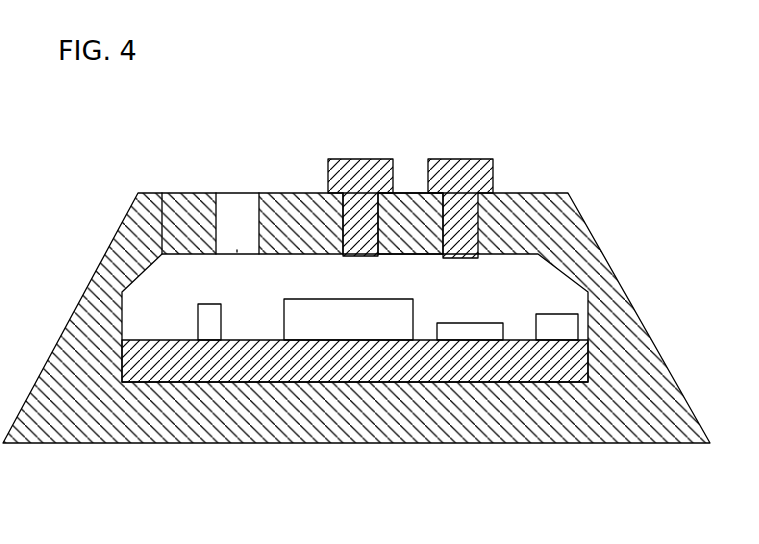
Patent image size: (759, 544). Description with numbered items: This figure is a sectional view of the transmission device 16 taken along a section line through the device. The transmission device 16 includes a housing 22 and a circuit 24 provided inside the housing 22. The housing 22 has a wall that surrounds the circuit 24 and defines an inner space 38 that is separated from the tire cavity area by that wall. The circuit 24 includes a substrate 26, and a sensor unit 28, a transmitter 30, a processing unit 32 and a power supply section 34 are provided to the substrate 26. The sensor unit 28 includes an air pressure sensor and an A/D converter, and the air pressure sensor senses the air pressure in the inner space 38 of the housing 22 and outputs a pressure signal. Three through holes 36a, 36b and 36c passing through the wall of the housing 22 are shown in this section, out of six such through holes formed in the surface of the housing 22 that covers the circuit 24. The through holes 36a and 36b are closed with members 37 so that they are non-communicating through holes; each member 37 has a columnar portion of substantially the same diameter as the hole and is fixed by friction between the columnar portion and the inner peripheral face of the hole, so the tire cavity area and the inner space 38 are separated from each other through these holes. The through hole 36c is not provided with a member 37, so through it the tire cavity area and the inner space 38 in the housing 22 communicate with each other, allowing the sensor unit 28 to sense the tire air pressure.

The transmission device 16 is at (580, 97).
The housing 22 is at (602, 263).
The circuit 24 is at (147, 312).
The substrate 26 is at (367, 362).
The sensor unit 28 is at (277, 217).
The transmitter 30 is at (557, 322).
The processing unit 32 is at (469, 325).
The power supply section 34 is at (210, 319).
The through hole 36a is at (380, 257).
The through hole 36b is at (487, 260).
The through hole 36c is at (247, 228).
The member 37 is at (352, 180).
The inner space 38 is at (397, 280).